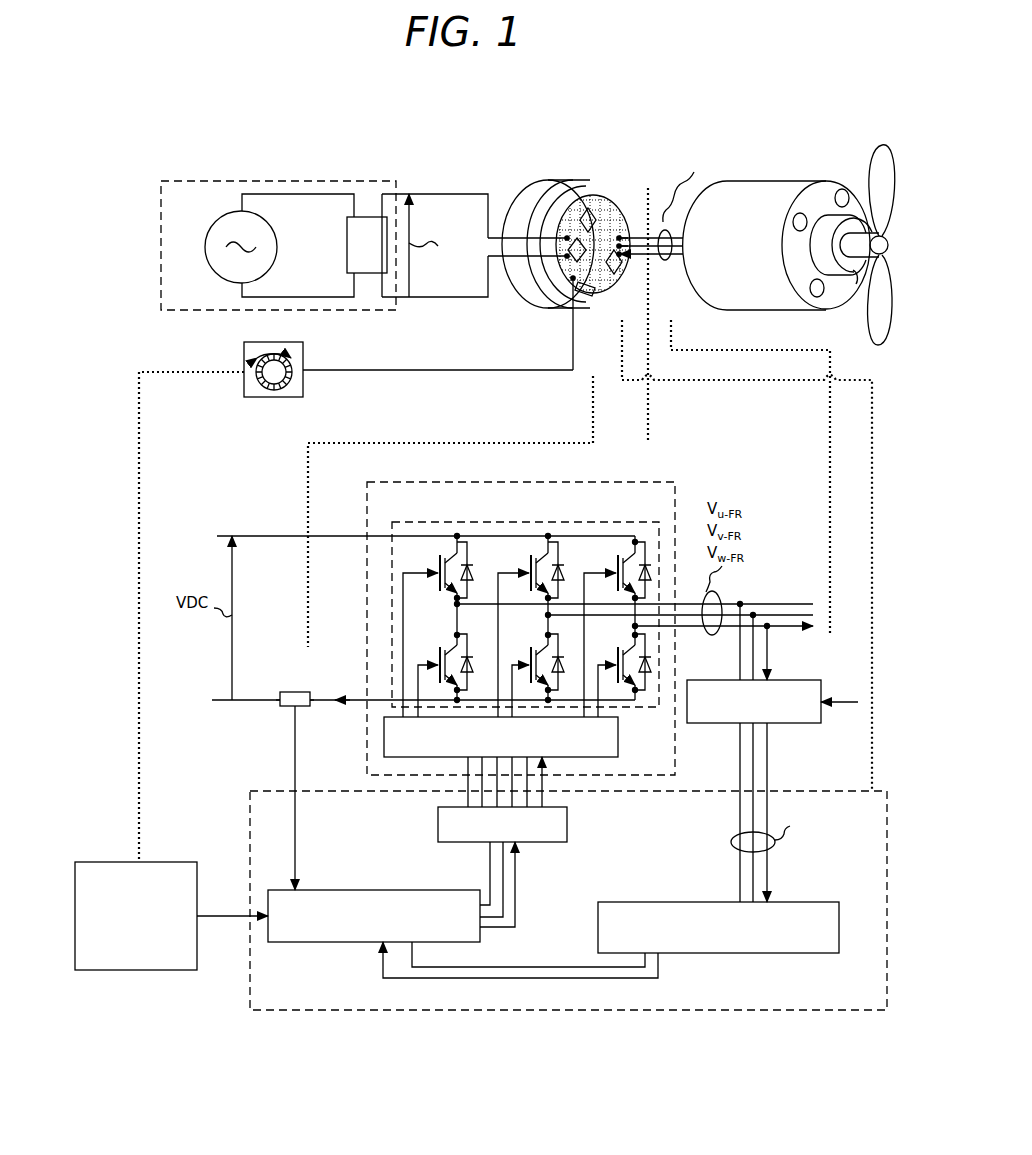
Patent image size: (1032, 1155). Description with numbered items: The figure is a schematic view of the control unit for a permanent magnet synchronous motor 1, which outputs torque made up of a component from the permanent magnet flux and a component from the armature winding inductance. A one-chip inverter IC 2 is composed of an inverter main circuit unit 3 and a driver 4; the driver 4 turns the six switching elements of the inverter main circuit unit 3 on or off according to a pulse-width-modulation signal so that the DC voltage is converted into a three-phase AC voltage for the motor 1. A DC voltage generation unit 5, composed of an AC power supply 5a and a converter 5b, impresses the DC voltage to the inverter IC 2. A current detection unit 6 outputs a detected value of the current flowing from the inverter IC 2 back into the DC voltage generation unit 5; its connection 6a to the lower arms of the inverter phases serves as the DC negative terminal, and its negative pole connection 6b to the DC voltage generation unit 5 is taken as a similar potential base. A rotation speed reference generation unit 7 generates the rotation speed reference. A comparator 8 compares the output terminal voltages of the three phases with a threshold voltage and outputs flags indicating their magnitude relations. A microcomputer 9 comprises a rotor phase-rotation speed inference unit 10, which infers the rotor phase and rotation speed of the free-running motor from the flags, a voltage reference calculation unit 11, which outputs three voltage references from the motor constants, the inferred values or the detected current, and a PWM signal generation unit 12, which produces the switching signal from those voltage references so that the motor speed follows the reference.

The permanent magnet synchronous motor 1 is at (769, 181).
The one-chip inverter IC 2 is at (592, 215).
The inverter main circuit unit 3 is at (586, 522).
The driver 4 is at (618, 741).
The DC voltage generation unit 5 is at (324, 223).
The AC power supply 5a is at (218, 283).
The converter 5b is at (347, 255).
The current detection unit 6 is at (423, 596).
The connection 6a is at (310, 700).
The negative pole connection 6b is at (279, 700).
The rotation speed reference generation unit 7 is at (304, 356).
The comparator 8 is at (615, 262).
The microcomputer 9 is at (583, 253).
The rotor phase-rotation speed inference unit 10 is at (672, 902).
The voltage reference calculation unit 11 is at (369, 890).
The PWM signal generation unit 12 is at (567, 825).